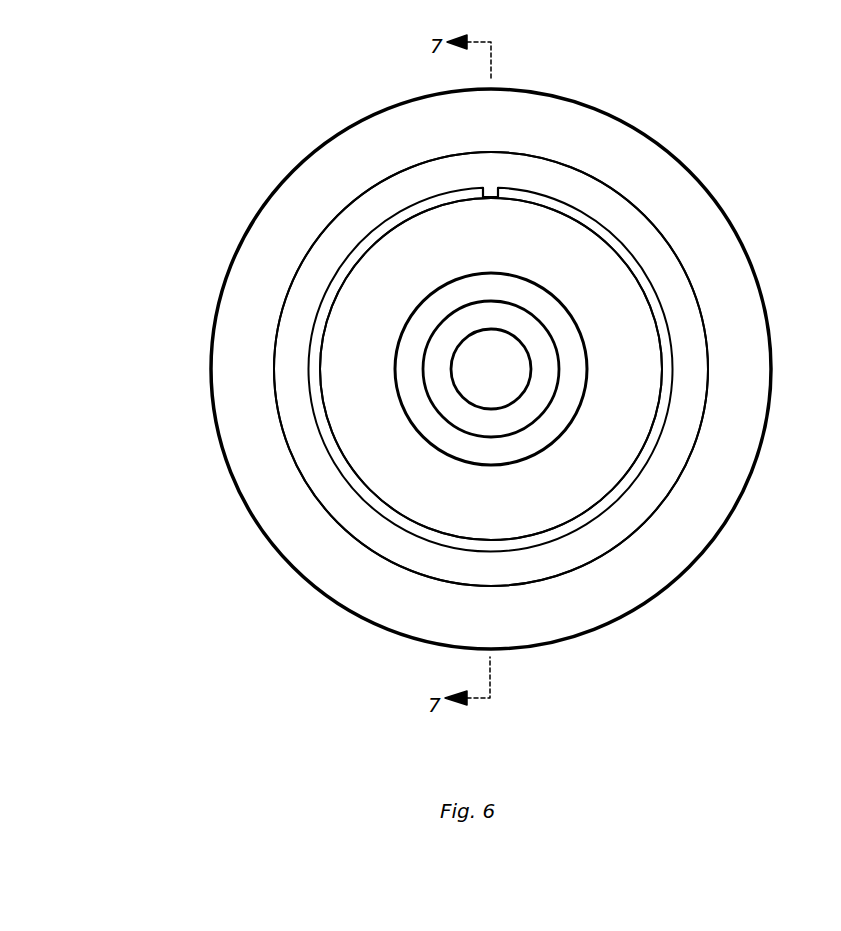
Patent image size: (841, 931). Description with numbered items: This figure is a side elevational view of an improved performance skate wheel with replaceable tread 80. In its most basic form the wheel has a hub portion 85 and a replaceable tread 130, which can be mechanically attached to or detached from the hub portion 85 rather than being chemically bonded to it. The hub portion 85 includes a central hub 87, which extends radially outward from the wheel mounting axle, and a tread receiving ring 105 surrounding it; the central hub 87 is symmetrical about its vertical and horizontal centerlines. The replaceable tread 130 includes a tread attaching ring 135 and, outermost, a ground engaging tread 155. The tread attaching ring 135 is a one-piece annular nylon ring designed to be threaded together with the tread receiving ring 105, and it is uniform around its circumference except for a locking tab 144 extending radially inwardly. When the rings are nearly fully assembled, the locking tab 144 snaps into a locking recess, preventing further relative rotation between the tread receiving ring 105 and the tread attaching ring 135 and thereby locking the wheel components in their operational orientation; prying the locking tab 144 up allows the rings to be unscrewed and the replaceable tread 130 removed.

The wheel with replaceable tread 80 is at (288, 135).
The hub portion 85 is at (375, 393).
The central hub 87 is at (428, 490).
The tread receiving ring 105 is at (348, 487).
The replaceable tread 130 is at (635, 530).
The tread attaching ring 135 is at (691, 409).
The locking tab 144 is at (490, 187).
The ground engaging tread 155 is at (689, 503).